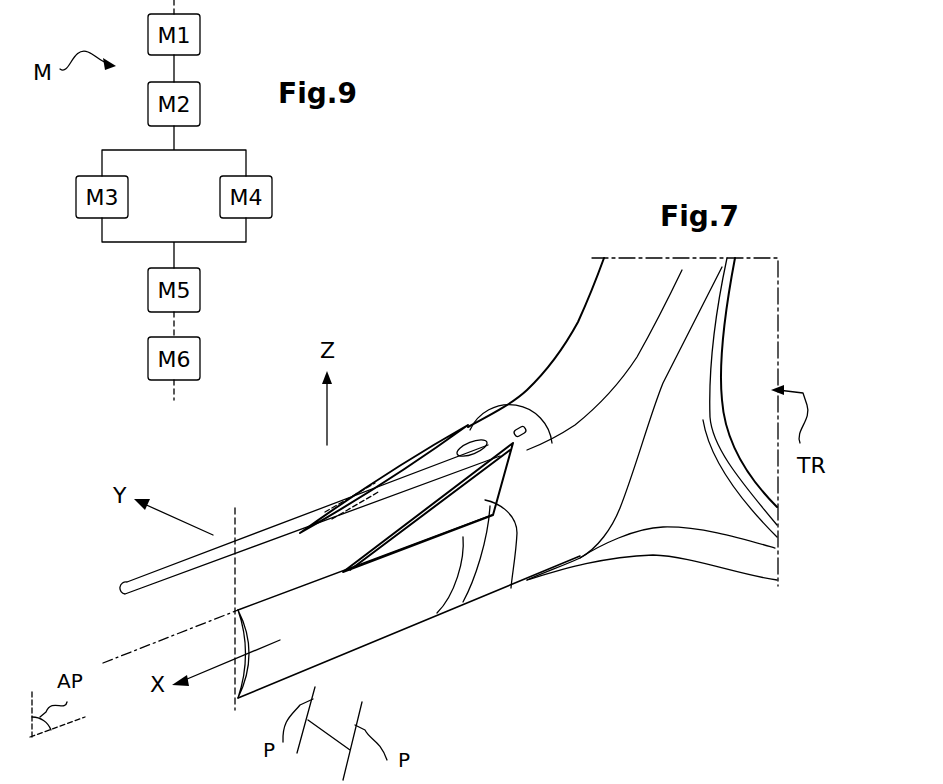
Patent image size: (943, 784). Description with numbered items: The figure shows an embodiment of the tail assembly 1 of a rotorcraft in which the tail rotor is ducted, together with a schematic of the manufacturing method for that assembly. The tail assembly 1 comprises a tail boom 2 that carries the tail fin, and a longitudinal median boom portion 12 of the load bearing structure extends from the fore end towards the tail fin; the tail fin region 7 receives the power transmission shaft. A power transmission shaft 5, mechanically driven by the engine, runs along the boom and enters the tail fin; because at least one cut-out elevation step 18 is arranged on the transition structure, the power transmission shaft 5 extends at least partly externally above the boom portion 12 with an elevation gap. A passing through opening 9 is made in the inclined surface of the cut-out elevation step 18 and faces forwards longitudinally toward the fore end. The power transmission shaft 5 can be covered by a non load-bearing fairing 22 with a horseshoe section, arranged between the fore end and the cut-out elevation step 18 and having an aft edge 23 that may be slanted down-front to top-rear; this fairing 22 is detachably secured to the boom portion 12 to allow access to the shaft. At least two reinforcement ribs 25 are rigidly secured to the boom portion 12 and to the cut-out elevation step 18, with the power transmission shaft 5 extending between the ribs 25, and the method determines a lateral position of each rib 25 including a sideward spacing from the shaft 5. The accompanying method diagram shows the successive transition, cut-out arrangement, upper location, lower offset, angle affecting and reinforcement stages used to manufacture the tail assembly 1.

The tail assembly 1 is at (501, 662).
The tail boom 2 is at (267, 693).
The power transmission shaft 5 is at (287, 523).
The fuselage / tail structure 7 is at (603, 321).
The passing through opening 9 is at (457, 423).
The longitudinal median boom portion 12 is at (393, 613).
The cut-out elevation step 18 is at (502, 430).
The non load-bearing fairing 22 is at (130, 653).
The aft edge 23 is at (503, 493).
The reinforcement ribs 25 is at (427, 450).